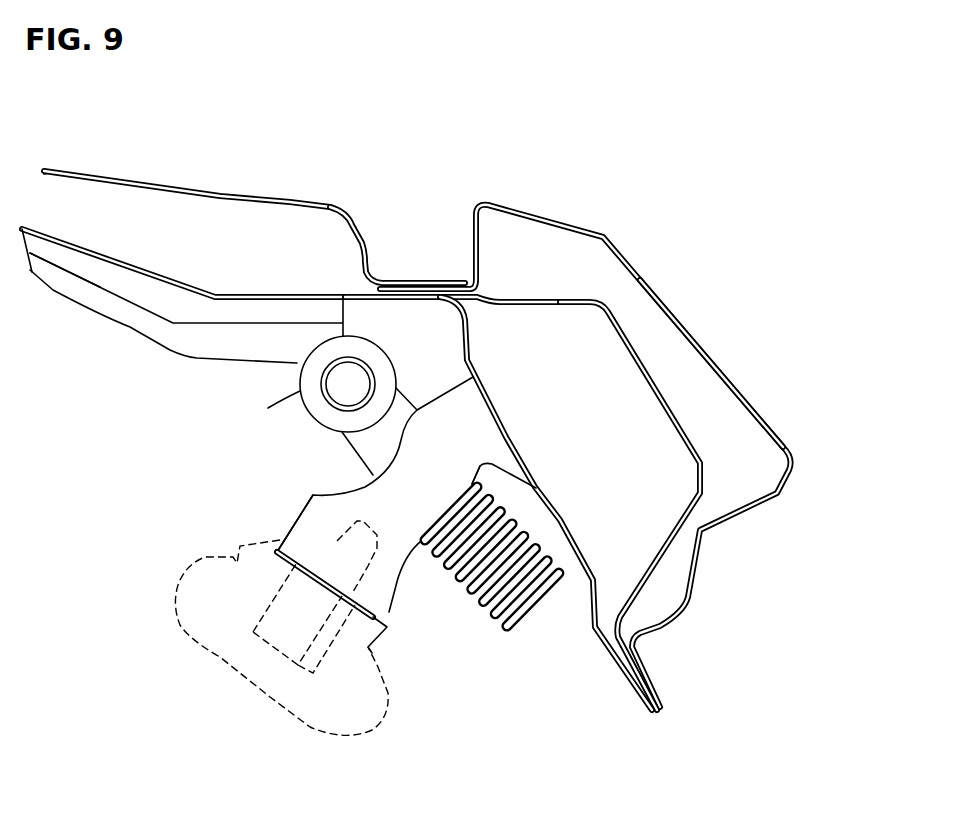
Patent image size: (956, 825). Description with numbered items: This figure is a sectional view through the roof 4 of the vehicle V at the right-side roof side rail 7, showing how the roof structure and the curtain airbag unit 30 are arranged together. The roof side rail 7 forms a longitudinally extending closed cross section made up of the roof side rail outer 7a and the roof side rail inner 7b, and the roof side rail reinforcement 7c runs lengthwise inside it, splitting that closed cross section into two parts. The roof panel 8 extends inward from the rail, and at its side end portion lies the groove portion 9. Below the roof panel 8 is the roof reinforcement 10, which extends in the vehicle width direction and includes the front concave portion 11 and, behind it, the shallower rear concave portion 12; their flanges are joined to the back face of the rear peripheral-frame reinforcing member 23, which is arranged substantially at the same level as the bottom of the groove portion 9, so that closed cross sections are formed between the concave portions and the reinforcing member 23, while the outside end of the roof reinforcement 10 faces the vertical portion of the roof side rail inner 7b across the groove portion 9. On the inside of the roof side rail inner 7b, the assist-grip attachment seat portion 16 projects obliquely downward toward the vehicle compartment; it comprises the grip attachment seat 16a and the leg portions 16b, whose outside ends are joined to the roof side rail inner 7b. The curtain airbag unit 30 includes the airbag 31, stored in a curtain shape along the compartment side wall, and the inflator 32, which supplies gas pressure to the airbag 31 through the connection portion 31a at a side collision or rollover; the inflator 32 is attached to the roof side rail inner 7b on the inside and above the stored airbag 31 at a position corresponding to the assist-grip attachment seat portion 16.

The vehicle V is at (570, 141).
The roof 4 is at (96, 163).
The roof panel 8 is at (200, 190).
The groove portion 9 is at (370, 239).
The rear concave portion 12 is at (107, 272).
The front concave portion 11 is at (87, 287).
The roof reinforcement 10 is at (122, 338).
The rear peripheral-frame reinforcing member 23 is at (353, 293).
The roof side rail 7 is at (639, 250).
The roof side rail outer 7a is at (738, 374).
The roof side rail inner 7b is at (472, 346).
The roof side rail reinforcement 7c is at (665, 401).
The inflator 32 is at (322, 384).
The connection portion 31a is at (340, 435).
The assist-grip attachment seat portion 16 is at (302, 493).
The leg portion 16b is at (302, 531).
The grip attachment seat 16a is at (367, 607).
The airbag 31 is at (533, 607).
The curtain airbag unit 30 is at (472, 632).